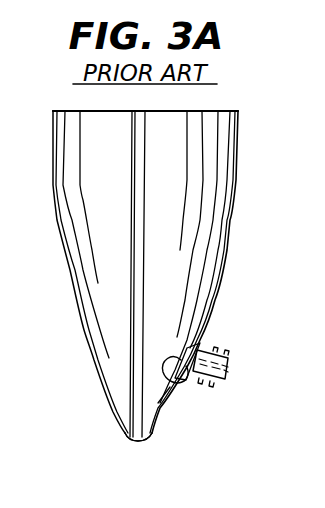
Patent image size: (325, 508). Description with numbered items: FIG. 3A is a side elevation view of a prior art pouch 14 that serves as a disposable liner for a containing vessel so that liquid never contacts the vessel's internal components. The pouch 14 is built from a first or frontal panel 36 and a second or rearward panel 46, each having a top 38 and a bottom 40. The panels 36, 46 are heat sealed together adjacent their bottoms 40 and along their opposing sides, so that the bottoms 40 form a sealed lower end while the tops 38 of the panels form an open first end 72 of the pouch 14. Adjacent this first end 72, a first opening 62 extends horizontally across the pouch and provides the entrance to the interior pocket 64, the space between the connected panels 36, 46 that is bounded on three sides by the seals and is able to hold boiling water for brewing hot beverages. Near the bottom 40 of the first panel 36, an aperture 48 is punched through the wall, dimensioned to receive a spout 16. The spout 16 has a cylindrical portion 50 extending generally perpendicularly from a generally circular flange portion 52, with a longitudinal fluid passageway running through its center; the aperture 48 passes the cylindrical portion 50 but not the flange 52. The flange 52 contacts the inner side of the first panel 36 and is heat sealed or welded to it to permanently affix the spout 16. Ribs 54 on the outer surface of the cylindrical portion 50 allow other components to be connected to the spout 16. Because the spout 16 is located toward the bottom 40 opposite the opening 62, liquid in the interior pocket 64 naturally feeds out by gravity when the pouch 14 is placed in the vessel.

The pouch 14 is at (261, 192).
The spout 16 is at (230, 369).
The first panel 36 is at (228, 243).
The top 38 is at (54, 111).
The bottom 40 is at (146, 438).
The second panel 46 is at (60, 240).
The aperture 48 is at (197, 340).
The cylindrical portion 50 is at (231, 358).
The flange portion 52 is at (182, 382).
The ribs 54 is at (212, 385).
The first opening 62 is at (193, 110).
The interior pocket 64 is at (180, 163).
The first end 72 is at (113, 111).